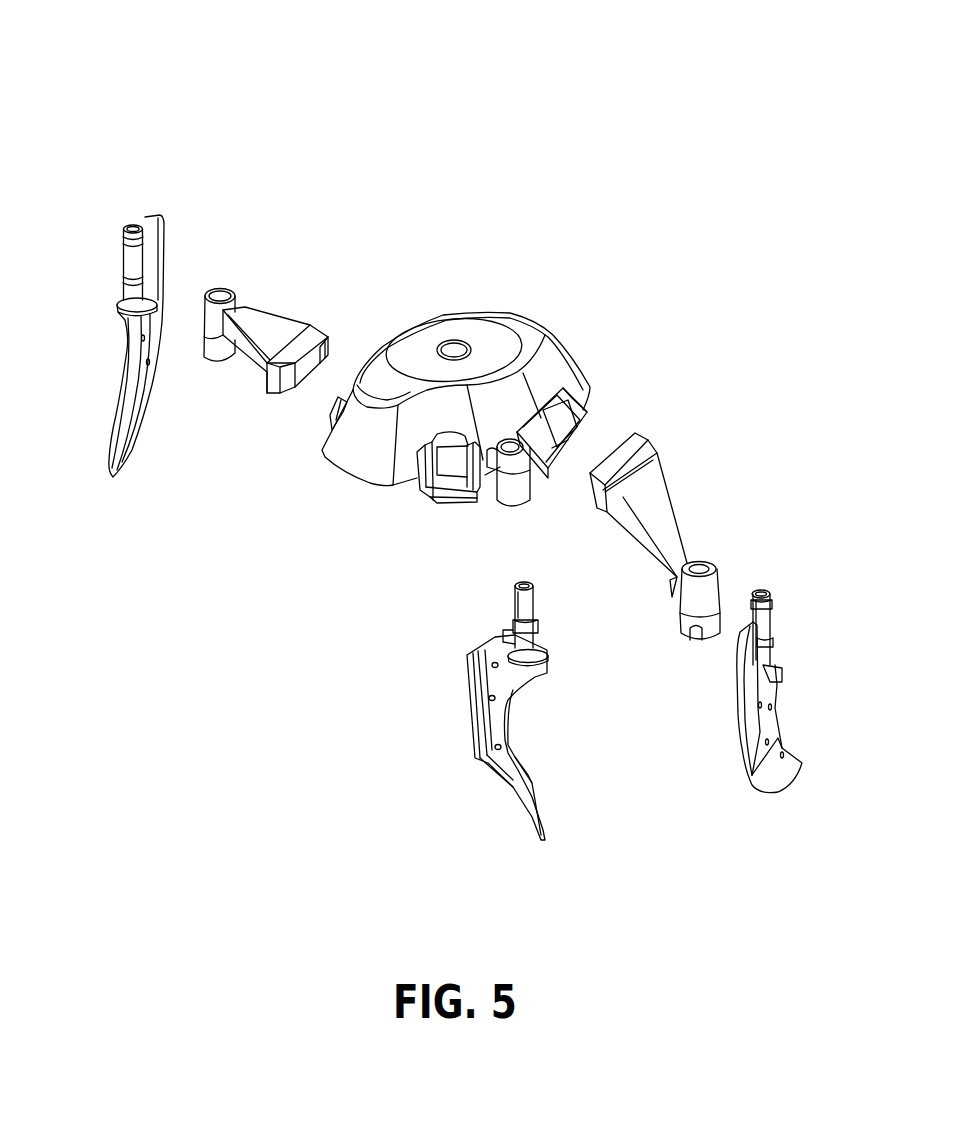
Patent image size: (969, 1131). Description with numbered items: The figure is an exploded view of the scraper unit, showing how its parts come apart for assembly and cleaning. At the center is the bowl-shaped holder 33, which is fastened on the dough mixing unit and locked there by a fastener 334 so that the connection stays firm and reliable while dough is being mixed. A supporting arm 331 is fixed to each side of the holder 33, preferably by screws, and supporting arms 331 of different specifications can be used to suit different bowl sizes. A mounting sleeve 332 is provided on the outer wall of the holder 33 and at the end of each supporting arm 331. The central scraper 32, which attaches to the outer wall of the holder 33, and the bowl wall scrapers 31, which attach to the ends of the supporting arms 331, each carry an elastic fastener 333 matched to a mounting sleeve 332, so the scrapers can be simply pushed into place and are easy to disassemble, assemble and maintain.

The bowl wall scraper 31 is at (111, 473).
The central scraper 32 is at (497, 718).
The holder 33 is at (428, 338).
The supporting arm 331 is at (263, 331).
The mounting sleeve 332 is at (220, 288).
The elastic fastener 333 is at (531, 584).
The fastener 334 is at (452, 468).